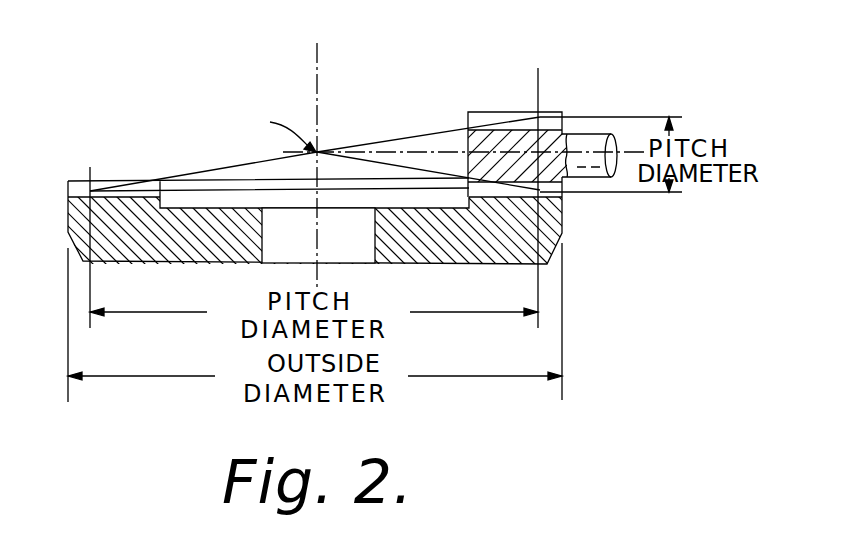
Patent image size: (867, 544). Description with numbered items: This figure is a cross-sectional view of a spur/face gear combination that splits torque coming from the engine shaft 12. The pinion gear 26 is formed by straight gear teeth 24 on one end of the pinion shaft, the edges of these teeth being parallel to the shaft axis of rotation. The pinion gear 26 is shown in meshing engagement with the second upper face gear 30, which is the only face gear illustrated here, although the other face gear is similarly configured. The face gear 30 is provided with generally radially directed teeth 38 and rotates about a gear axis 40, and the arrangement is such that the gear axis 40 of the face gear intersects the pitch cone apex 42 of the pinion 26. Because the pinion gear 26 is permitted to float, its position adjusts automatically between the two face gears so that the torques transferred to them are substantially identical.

The engine shaft 12 is at (588, 145).
The straight gear teeth 24 is at (472, 108).
The pinion gear 26 is at (550, 62).
The second upper face gear 30 is at (566, 224).
The radially directed teeth 38 is at (71, 184).
The gear axis 40 is at (318, 83).
The pitch cone apex 42 is at (183, 68).